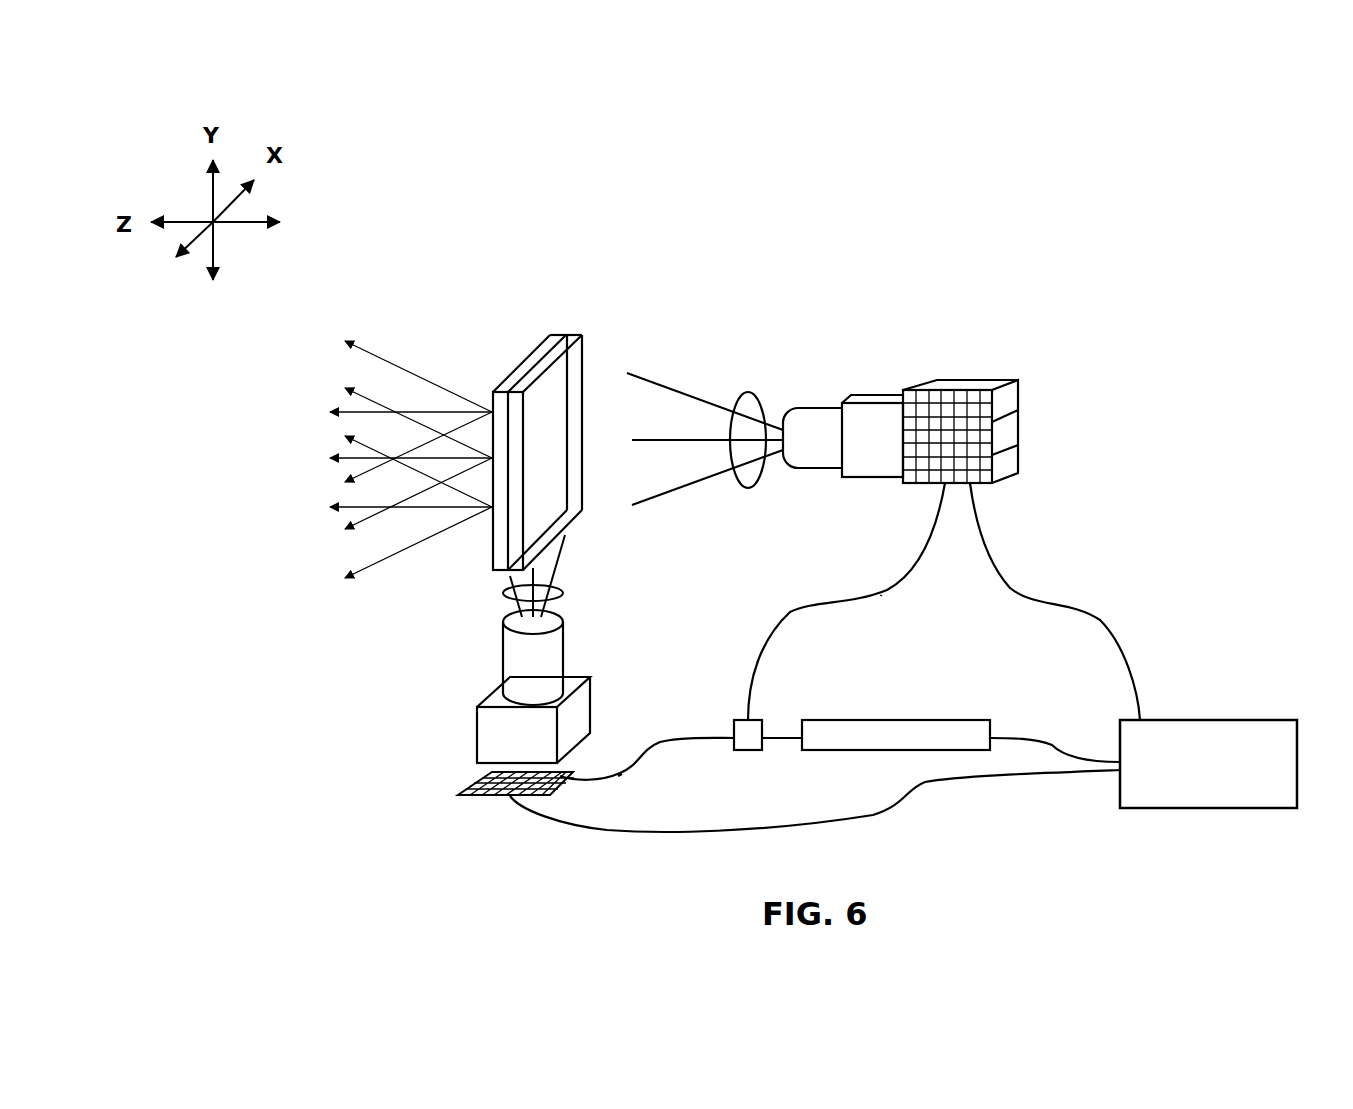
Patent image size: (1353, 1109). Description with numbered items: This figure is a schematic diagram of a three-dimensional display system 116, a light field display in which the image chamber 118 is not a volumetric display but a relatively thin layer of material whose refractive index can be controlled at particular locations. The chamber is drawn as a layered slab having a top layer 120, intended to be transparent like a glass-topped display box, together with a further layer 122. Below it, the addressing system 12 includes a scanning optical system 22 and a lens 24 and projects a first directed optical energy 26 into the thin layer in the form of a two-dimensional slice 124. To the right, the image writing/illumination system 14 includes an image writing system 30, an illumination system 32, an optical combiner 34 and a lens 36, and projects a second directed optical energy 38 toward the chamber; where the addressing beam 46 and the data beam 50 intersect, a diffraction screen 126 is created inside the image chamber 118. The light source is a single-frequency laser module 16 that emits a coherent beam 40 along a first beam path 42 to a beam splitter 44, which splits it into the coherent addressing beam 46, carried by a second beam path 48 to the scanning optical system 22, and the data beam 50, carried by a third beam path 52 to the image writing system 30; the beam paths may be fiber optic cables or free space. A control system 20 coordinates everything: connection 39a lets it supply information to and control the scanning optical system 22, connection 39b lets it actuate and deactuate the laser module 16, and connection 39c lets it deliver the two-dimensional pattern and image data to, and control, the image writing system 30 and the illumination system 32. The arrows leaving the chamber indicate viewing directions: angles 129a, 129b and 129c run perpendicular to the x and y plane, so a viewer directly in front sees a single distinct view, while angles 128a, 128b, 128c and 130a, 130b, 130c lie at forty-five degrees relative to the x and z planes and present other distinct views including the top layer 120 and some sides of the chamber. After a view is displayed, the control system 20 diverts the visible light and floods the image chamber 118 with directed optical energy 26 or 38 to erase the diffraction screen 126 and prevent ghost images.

The three-dimensional display system 116 is at (931, 257).
The image chamber 118 is at (574, 333).
The top layer 120 is at (530, 353).
The second layer 122 is at (585, 377).
The 2-D slice 124 is at (546, 345).
The diffraction screen 126 is at (566, 484).
The viewing angle 128a is at (380, 353).
The viewing angle 128b is at (373, 400).
The viewing angle 128c is at (370, 447).
The viewing angle 129a is at (360, 408).
The viewing angle 129b is at (360, 455).
The viewing angle 129c is at (360, 505).
The viewing angle 130a is at (363, 477).
The viewing angle 130b is at (363, 520).
The viewing angle 130c is at (367, 567).
The first directed optical energy 26 is at (505, 593).
The lens 24 is at (503, 650).
The addressing system 12 is at (477, 735).
The scanning optical system 22 is at (476, 798).
The image writing/illumination system 14 is at (882, 398).
The second directed optical energy 38 is at (752, 395).
The lens 36 is at (805, 470).
The image writing system 30 is at (928, 485).
The illumination system 32 is at (1005, 480).
The optical combiner 34 is at (975, 385).
The data beam 50 is at (785, 618).
The third beam path 52 is at (820, 605).
The connection 39a is at (800, 822).
The connection 39b is at (1035, 740).
The connection 39c is at (1103, 620).
The beam splitter 44 is at (742, 752).
The addressing beam 46 is at (712, 738).
The second beam path 48 is at (622, 780).
The beam 40 is at (778, 738).
The first beam path 42 is at (773, 740).
The single-frequency laser module 16 is at (948, 720).
The control system 20 is at (1228, 720).